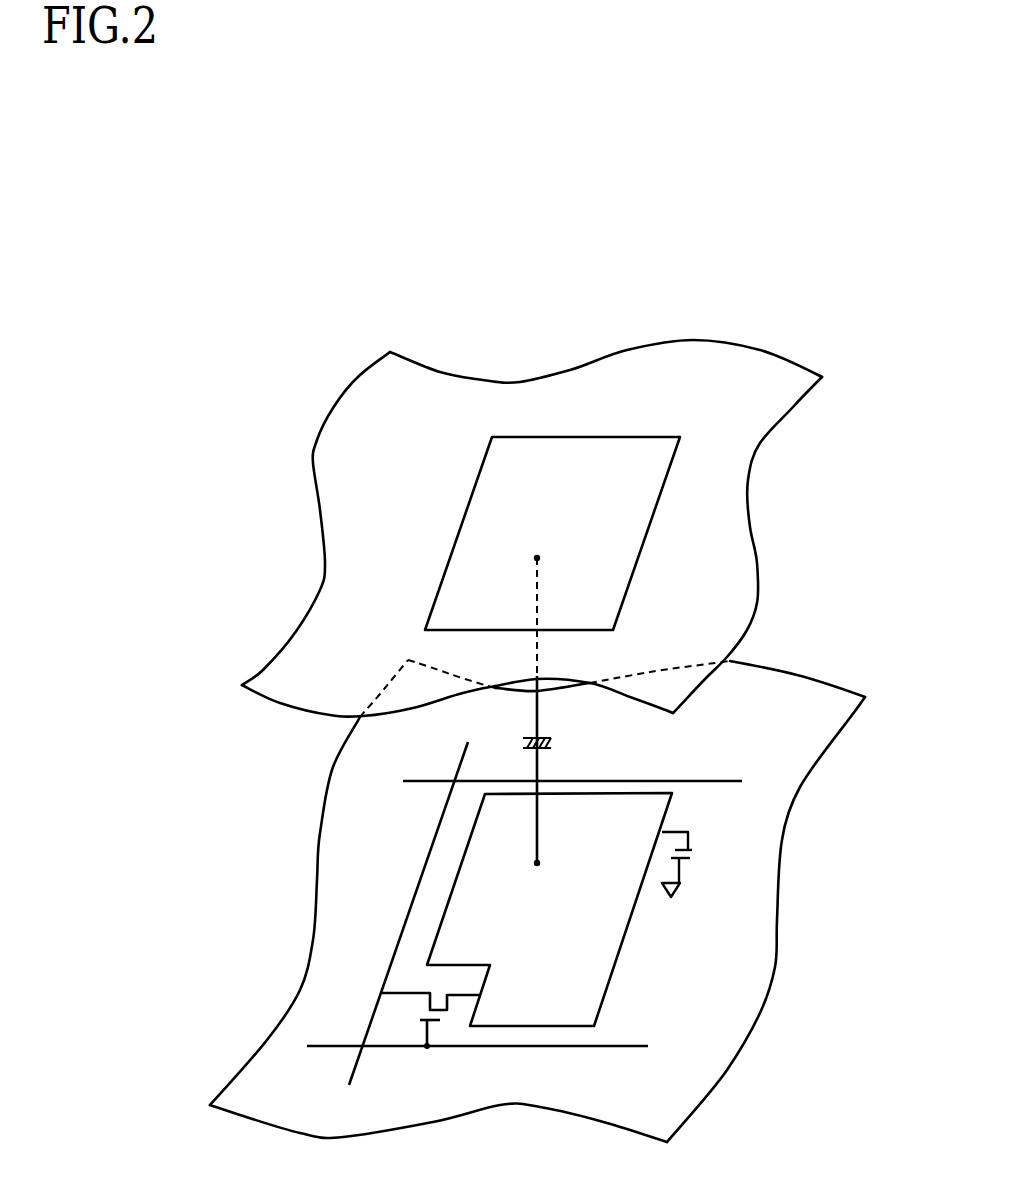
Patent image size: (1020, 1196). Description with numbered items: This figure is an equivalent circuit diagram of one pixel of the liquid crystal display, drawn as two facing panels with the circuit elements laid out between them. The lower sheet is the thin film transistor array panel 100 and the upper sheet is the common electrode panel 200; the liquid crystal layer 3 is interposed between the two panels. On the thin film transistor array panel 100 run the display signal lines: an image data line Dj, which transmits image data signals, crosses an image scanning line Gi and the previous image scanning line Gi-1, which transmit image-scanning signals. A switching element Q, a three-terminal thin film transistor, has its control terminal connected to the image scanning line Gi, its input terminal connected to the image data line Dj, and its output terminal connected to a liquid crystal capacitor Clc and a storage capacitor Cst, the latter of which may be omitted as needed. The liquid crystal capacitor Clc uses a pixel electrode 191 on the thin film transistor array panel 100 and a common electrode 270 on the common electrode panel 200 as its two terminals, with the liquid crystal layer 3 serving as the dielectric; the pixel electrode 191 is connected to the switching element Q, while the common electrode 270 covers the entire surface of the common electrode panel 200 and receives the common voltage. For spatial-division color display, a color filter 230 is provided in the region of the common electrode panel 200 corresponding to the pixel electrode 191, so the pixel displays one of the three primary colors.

The liquid crystal layer 3 is at (229, 795).
The thin film transistor array panel 100 is at (550, 848).
The common electrode panel 200 is at (555, 528).
The color filter 230 is at (643, 548).
The common electrode 270 is at (748, 503).
The pixel electrode 191 is at (617, 963).
The switching element Q is at (430, 1021).
The liquid crystal capacitor Clc is at (559, 710).
The storage capacitor Cst is at (698, 864).
The image data line Dj is at (408, 910).
The image scanning line Gi is at (477, 1028).
The previous image scanning line Gi-1 is at (558, 800).